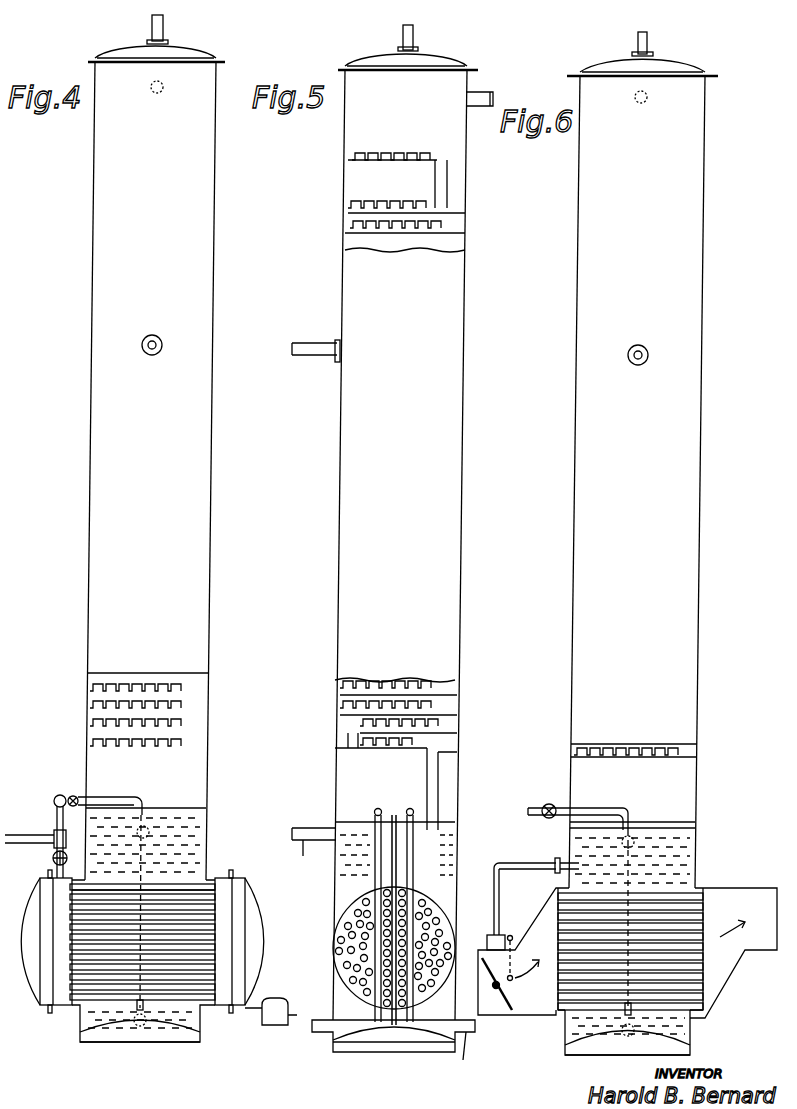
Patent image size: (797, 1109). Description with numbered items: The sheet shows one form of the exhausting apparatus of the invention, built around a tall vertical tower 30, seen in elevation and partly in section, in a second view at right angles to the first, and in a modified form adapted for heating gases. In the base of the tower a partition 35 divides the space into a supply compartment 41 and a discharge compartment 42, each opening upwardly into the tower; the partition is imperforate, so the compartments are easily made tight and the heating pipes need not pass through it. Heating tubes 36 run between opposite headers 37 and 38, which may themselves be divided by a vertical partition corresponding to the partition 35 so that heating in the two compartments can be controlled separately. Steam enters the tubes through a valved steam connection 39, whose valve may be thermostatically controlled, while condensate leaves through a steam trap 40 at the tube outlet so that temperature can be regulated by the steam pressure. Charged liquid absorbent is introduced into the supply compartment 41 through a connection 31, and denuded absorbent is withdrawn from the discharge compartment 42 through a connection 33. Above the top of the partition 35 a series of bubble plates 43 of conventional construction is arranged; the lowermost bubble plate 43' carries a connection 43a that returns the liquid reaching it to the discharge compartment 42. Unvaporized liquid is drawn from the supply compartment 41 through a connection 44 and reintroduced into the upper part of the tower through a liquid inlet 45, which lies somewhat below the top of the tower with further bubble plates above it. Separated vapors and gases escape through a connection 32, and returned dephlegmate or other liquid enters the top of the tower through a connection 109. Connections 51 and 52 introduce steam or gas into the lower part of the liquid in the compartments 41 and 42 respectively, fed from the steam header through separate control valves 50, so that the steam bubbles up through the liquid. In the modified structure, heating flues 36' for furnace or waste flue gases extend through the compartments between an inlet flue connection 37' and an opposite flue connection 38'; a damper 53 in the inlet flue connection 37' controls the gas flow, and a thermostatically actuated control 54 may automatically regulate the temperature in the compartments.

In FIG. 4, the tower 30 is at (212, 521).
In FIG. 5, the tower 30 is at (466, 510).
In FIG. 6, the tower 30 is at (697, 540).
In FIG. 4, the connection 31 is at (140, 1028).
In FIG. 5, the connection 31 is at (318, 1020).
In FIG. 6, the connection 31 is at (620, 1034).
In FIG. 4, the connection 32 is at (165, 30).
In FIG. 5, the connection 32 is at (414, 35).
In FIG. 6, the connection 32 is at (648, 42).
In FIG. 5, the connection 33 is at (465, 1060).
In FIG. 4, the partition 35 is at (183, 808).
In FIG. 5, the partition 35 is at (393, 814).
In FIG. 6, the partition 35 is at (682, 822).
In FIG. 4, the heating tubes 36 is at (111, 961).
In FIG. 5, the heating tubes 36 is at (372, 948).
In FIG. 6, the heating flues 36' is at (663, 968).
In FIG. 4, the header 37 is at (37, 941).
In FIG. 6, the inlet flue connection 37' is at (523, 975).
In FIG. 4, the header 38 is at (242, 940).
In FIG. 6, the flue connection 38' is at (733, 936).
In FIG. 4, the valved steam connection 39 is at (53, 861).
In FIG. 4, the steam trap 40 is at (268, 1028).
In FIG. 5, the supply compartment 41 is at (350, 835).
In FIG. 5, the discharge compartment 42 is at (442, 848).
In FIG. 4, the bubble plates 43 is at (119, 709).
In FIG. 5, the bubble plates 43 is at (381, 196).
In FIG. 6, the bubble plates 43 is at (655, 753).
In FIG. 5, the lowermost bubble plate 43' is at (423, 755).
In FIG. 5, the connection 43a is at (440, 790).
In FIG. 4, the connection 44 is at (146, 825).
In FIG. 5, the connection 44 is at (303, 846).
In FIG. 6, the connection 44 is at (636, 836).
In FIG. 4, the liquid inlet 45 is at (155, 334).
In FIG. 5, the liquid inlet 45 is at (305, 358).
In FIG. 6, the liquid inlet 45 is at (646, 346).
In FIG. 4, the control valves 50 is at (56, 800).
In FIG. 4, the connection 51 is at (100, 797).
In FIG. 5, the connection 51 is at (377, 808).
In FIG. 6, the connection 51 is at (580, 808).
In FIG. 5, the connection 52 is at (410, 808).
In FIG. 6, the damper 53 is at (497, 996).
In FIG. 6, the thermostatically actuated control 54 is at (503, 932).
In FIG. 4, the connection 109 is at (158, 94).
In FIG. 5, the connection 109 is at (481, 108).
In FIG. 6, the connection 109 is at (644, 104).